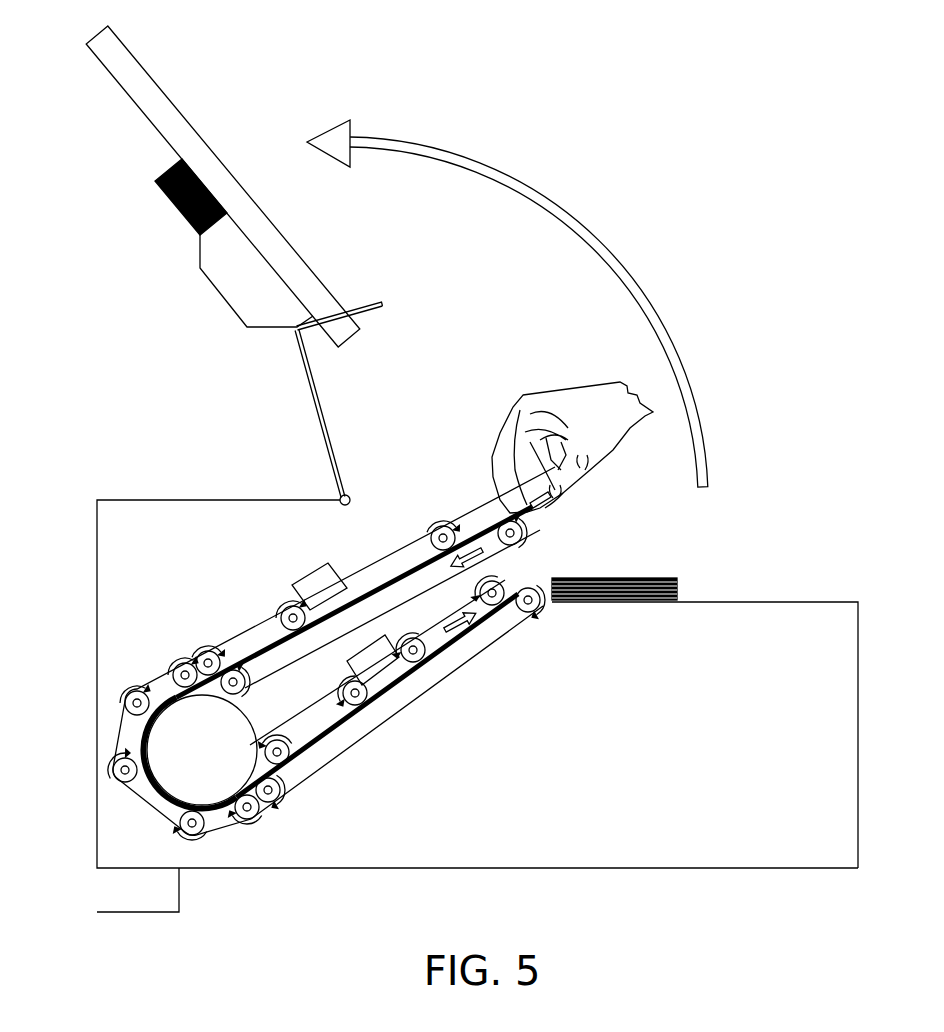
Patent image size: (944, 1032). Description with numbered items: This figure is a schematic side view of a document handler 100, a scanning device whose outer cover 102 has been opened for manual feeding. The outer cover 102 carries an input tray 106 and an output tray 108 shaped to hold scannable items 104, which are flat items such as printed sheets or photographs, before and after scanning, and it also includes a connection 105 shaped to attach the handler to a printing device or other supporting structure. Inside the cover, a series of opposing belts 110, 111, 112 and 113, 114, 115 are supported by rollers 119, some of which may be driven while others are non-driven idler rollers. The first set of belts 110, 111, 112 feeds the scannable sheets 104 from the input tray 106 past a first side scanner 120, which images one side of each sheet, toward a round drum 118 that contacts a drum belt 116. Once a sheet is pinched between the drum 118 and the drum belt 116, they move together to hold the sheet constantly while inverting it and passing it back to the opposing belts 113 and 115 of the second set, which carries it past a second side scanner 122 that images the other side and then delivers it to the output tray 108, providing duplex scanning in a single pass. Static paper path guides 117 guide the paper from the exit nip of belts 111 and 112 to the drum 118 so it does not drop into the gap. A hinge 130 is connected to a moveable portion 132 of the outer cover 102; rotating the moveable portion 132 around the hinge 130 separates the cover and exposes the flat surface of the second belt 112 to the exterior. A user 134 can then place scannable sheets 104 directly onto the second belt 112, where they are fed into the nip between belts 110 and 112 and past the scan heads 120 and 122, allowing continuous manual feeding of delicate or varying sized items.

The document handler 100 is at (162, 478).
The outer cover 102 is at (232, 499).
The scannable items 104 is at (162, 178).
The connection 105 is at (138, 890).
The input tray 106 is at (150, 117).
The output tray 108 is at (748, 601).
The belt 110 is at (403, 544).
The belt 111 is at (262, 619).
The second belt 112 is at (431, 565).
The belt 113 is at (330, 728).
The belt 114 is at (446, 640).
The belt 115 is at (358, 738).
The drum belt 116 is at (152, 685).
The static paper path guides 117 is at (208, 688).
The drum 118 is at (202, 750).
The rollers 119 is at (203, 655).
The first side scanner 120 is at (303, 577).
The second side scanner 122 is at (392, 637).
The hinge 130 is at (339, 497).
The moveable portion 132 is at (206, 142).
The user 134 is at (557, 395).